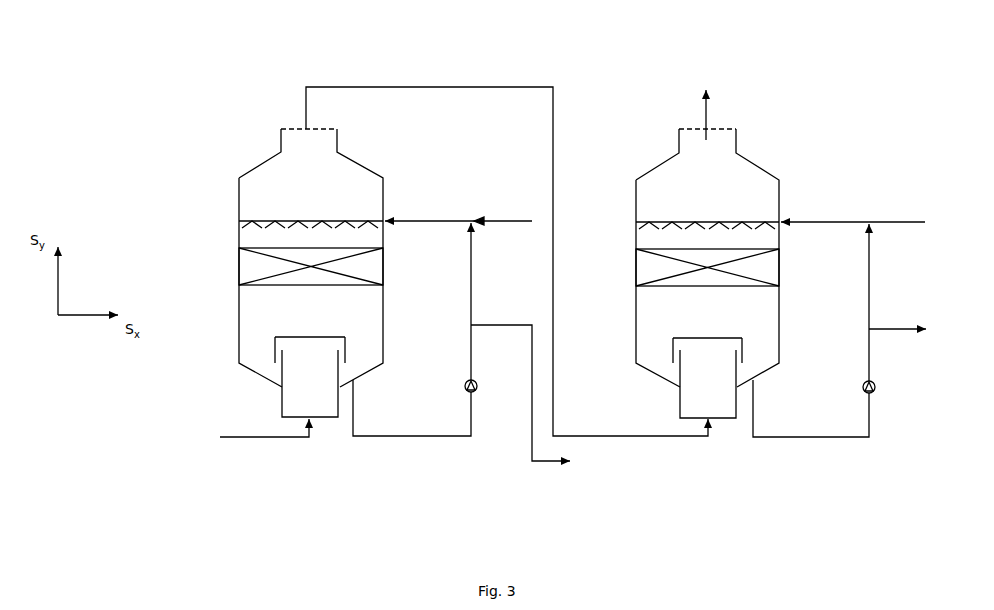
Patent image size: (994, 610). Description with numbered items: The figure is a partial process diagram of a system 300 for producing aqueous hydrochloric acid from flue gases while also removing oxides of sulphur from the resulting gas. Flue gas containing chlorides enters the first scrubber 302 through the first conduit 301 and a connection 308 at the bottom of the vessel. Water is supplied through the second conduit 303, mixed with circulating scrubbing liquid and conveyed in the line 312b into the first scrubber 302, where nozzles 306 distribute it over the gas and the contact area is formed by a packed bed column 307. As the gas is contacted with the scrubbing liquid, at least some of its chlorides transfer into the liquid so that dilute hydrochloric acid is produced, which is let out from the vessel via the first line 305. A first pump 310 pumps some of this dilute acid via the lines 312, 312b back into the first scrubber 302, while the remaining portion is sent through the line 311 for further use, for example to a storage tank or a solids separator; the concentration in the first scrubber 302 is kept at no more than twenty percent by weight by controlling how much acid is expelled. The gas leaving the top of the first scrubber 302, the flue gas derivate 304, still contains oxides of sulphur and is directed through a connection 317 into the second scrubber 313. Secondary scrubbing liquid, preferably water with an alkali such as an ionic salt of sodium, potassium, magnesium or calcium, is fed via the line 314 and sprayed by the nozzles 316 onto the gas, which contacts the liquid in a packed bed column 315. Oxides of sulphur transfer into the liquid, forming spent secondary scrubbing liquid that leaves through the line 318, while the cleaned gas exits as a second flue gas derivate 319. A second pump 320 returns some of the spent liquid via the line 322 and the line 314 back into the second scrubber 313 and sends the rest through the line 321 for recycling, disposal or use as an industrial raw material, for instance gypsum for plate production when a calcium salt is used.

The system 300 is at (253, 72).
The first conduit 301 is at (262, 440).
The first scrubber 302 is at (238, 197).
The second conduit 303 is at (491, 219).
The flue gas derivate 304 is at (418, 86).
The first line 305 is at (385, 436).
The spray nozzles 306 is at (388, 228).
The packed bed column 307 is at (238, 268).
The connection 308 is at (280, 400).
The first pump 310 is at (478, 390).
The line 311 is at (492, 324).
The line 312 is at (476, 276).
The line 312b is at (421, 219).
The second scrubber 313 is at (765, 165).
The line 314 is at (885, 221).
The packed bed column 315 is at (775, 268).
The nozzles 316 is at (784, 229).
The connection 317 is at (680, 398).
The line 318 is at (786, 436).
The second flue gas derivate 319 is at (705, 115).
The second pump 320 is at (877, 390).
The line 321 is at (900, 328).
The line 322 is at (873, 276).